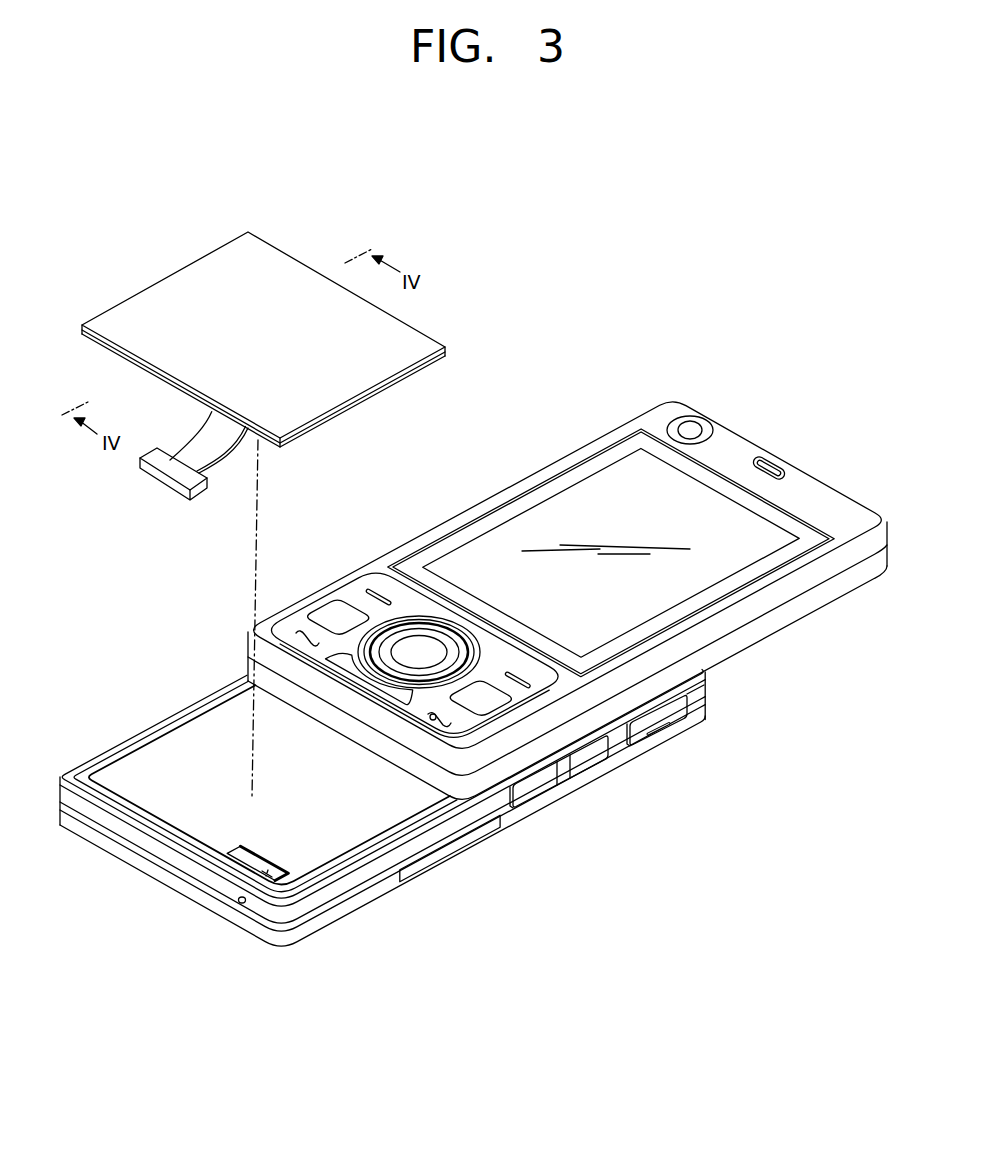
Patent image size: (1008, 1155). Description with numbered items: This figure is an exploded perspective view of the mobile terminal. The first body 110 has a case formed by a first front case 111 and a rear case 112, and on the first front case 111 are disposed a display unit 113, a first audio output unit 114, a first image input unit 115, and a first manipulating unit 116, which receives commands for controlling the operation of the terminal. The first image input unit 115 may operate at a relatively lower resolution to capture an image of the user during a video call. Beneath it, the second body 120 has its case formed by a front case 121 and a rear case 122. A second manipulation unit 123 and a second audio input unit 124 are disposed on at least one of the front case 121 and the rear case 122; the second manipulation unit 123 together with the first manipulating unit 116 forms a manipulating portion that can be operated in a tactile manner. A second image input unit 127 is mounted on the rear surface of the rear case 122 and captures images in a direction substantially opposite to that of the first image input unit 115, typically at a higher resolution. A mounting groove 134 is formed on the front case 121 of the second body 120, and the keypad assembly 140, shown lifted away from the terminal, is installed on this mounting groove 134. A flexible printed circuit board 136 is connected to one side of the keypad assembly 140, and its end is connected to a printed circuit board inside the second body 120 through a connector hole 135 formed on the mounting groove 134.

The first body 110 is at (583, 585).
The first front case 111 is at (788, 598).
The rear case 112 is at (840, 590).
The display unit 113 is at (573, 495).
The first audio output unit 114 is at (770, 467).
The first image input unit 115 is at (693, 432).
The first manipulating unit 116 is at (373, 590).
The second body 120 is at (417, 794).
The front case 121 is at (695, 690).
The rear case 122 is at (620, 753).
The second manipulation unit 123 is at (540, 790).
The second audio input unit 124 is at (239, 903).
The second image input unit 127 is at (452, 847).
The mounting groove 134 is at (333, 837).
The connector hole 135 is at (270, 872).
The flexible printed circuit board 136 is at (190, 458).
The keypad assembly 140 is at (154, 262).